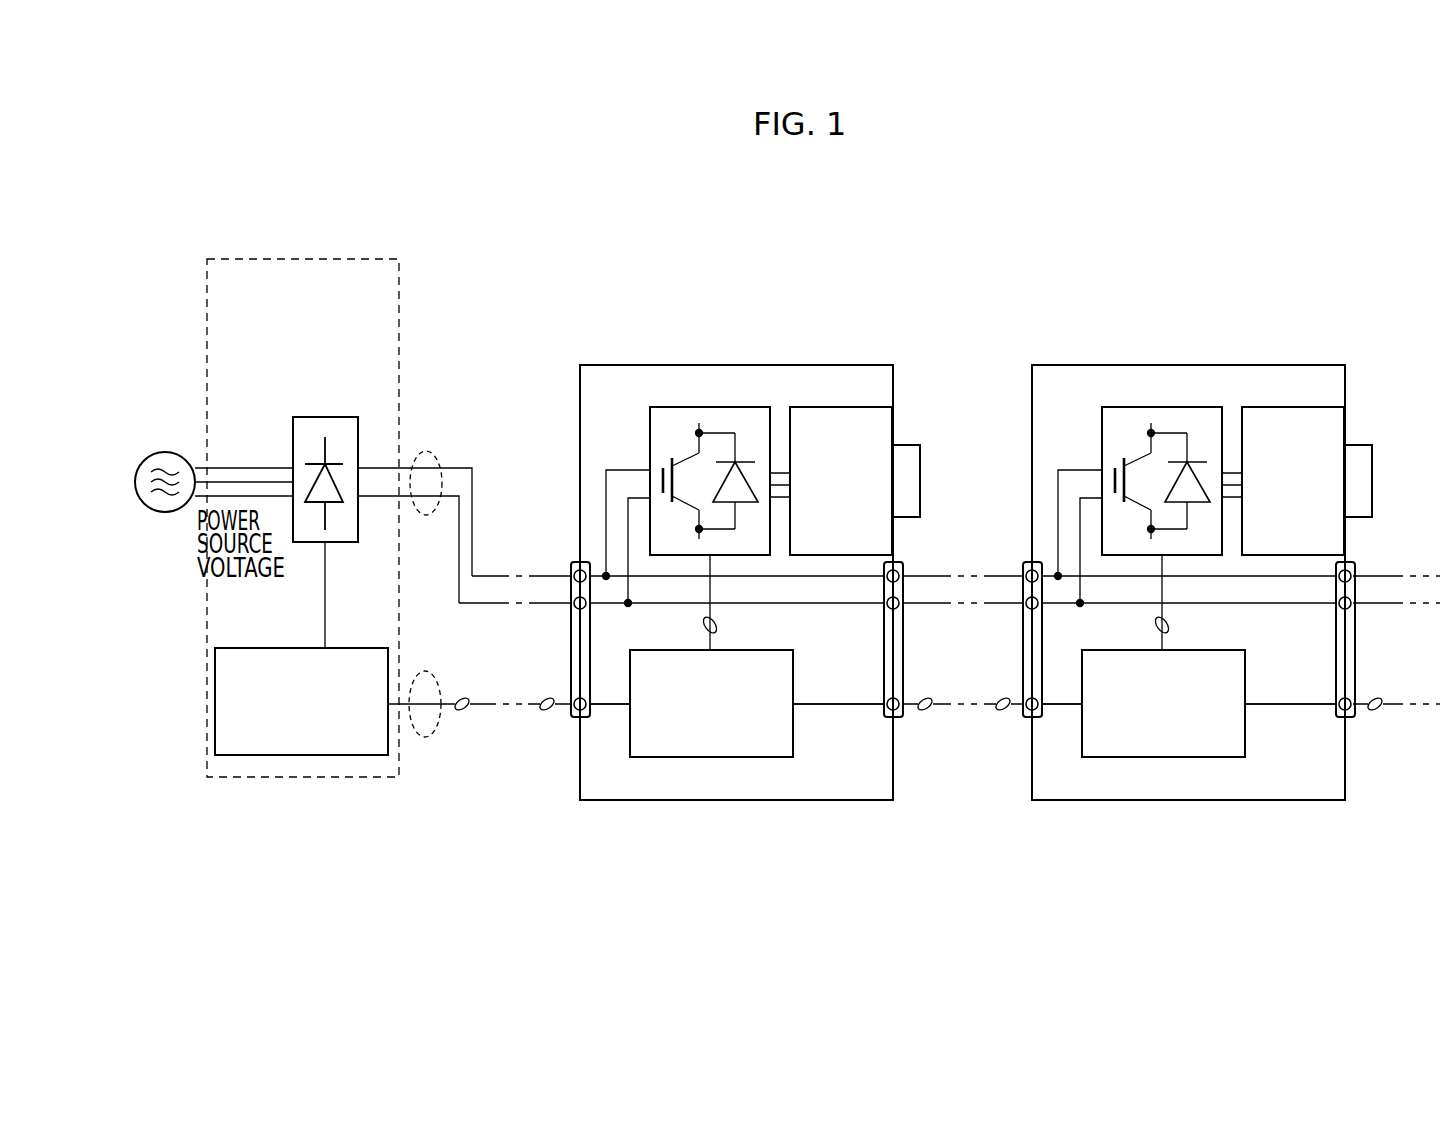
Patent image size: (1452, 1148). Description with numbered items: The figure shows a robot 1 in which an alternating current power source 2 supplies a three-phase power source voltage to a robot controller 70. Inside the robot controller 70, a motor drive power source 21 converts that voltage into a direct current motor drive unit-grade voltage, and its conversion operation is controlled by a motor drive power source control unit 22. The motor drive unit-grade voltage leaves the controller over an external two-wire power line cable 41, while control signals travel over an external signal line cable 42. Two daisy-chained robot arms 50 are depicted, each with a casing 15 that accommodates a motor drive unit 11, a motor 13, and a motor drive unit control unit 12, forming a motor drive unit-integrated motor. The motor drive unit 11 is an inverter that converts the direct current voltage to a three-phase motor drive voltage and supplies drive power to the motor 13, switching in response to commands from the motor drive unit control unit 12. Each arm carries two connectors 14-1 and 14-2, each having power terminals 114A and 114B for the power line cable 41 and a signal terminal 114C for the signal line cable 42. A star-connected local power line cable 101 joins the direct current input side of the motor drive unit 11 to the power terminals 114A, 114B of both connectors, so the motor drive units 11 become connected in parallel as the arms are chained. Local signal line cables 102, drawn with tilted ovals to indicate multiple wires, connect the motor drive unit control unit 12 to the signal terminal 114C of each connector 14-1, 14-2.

The robot 1 is at (1022, 238).
The alternating current power source 2 is at (165, 452).
The robot controller 70 is at (328, 259).
The motor drive power source 21 is at (328, 417).
The motor drive power source control unit 22 is at (320, 755).
The power line cable 41 is at (436, 452).
The signal line cable 42 is at (422, 737).
The robot arm 50 is at (618, 365).
The local power line cable 101 is at (612, 452).
The motor drive unit 11 is at (707, 407).
The motor 13 is at (815, 407).
The casing 15 is at (878, 365).
The motor drive unit control unit 12 is at (705, 757).
The local signal line cable 102 is at (613, 705).
The connector 14-1 is at (573, 717).
The connector 14-2 is at (903, 717).
The power terminal 114A is at (573, 564).
The power terminal 114B is at (580, 610).
The signal terminal 114C is at (580, 700).